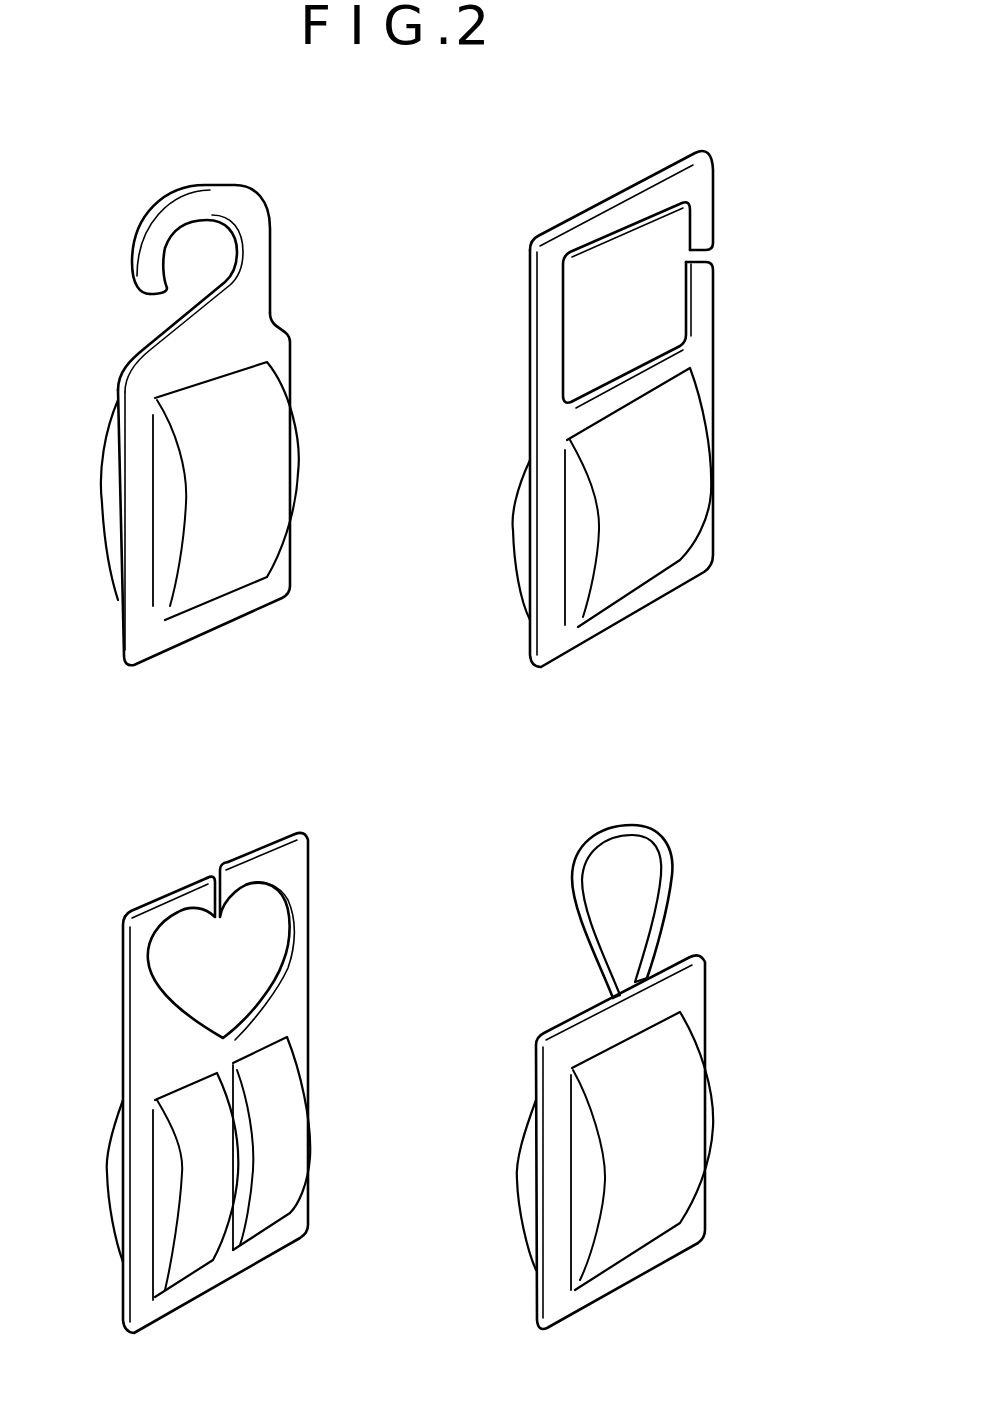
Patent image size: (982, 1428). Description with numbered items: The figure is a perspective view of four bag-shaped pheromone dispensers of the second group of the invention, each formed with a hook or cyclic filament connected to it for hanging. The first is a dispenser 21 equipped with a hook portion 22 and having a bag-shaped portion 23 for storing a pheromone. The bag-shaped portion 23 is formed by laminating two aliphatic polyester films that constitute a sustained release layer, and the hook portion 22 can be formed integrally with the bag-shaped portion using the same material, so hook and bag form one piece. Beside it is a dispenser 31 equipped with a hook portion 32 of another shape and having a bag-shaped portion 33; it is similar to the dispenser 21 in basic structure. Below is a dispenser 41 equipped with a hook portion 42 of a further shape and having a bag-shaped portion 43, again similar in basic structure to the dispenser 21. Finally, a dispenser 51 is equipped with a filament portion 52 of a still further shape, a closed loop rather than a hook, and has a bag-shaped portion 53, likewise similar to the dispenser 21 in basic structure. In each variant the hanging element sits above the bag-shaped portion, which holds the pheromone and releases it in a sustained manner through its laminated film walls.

The dispenser 21 is at (280, 278).
The hook portion 22 is at (185, 210).
The bag-shaped portion 23 is at (280, 477).
The dispenser 31 is at (720, 365).
The hook portion 32 is at (607, 215).
The bag-shaped portion 33 is at (675, 495).
The dispenser 41 is at (315, 990).
The hook portion 42 is at (295, 867).
The bag-shaped portion 43 is at (295, 1143).
The dispenser 51 is at (710, 1005).
The filament portion 52 is at (670, 862).
The bag-shaped portion 53 is at (687, 1142).